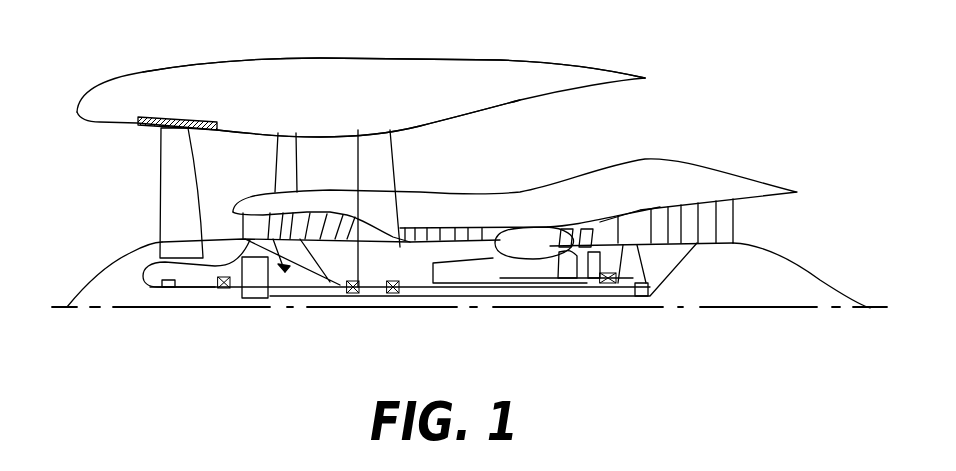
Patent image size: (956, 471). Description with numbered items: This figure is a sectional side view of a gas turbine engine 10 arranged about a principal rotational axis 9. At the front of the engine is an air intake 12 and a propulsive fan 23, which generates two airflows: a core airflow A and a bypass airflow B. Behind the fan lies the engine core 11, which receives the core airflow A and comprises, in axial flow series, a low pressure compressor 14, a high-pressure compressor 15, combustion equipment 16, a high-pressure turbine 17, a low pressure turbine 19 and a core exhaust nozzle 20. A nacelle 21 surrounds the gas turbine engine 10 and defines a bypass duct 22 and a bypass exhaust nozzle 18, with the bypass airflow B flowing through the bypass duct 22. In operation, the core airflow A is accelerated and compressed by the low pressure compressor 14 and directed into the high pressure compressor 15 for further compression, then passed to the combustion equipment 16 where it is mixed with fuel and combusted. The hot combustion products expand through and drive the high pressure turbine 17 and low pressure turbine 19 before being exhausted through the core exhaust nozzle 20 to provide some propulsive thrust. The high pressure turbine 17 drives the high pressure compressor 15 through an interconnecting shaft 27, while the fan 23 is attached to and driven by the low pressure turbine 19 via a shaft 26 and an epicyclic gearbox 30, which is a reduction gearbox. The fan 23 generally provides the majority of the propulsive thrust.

The principal rotational axis 9 is at (700, 307).
The gas turbine engine 10 is at (143, 72).
The core 11 is at (507, 212).
The air intake 12 is at (84, 164).
The low pressure compressor 14 is at (321, 215).
The high-pressure compressor 15 is at (452, 240).
The combustion equipment 16 is at (531, 250).
The high-pressure turbine 17 is at (580, 232).
The bypass exhaust nozzle 18 is at (704, 120).
The low pressure turbine 19 is at (707, 207).
The core exhaust nozzle 20 is at (773, 226).
The nacelle 21 is at (383, 75).
The bypass duct 22 is at (622, 135).
The propulsive fan 23 is at (167, 197).
The shaft 26 is at (449, 298).
The interconnecting shaft 27 is at (487, 285).
The epicyclic gearbox 30 is at (257, 283).
The core airflow A is at (225, 227).
The bypass airflow B is at (236, 167).